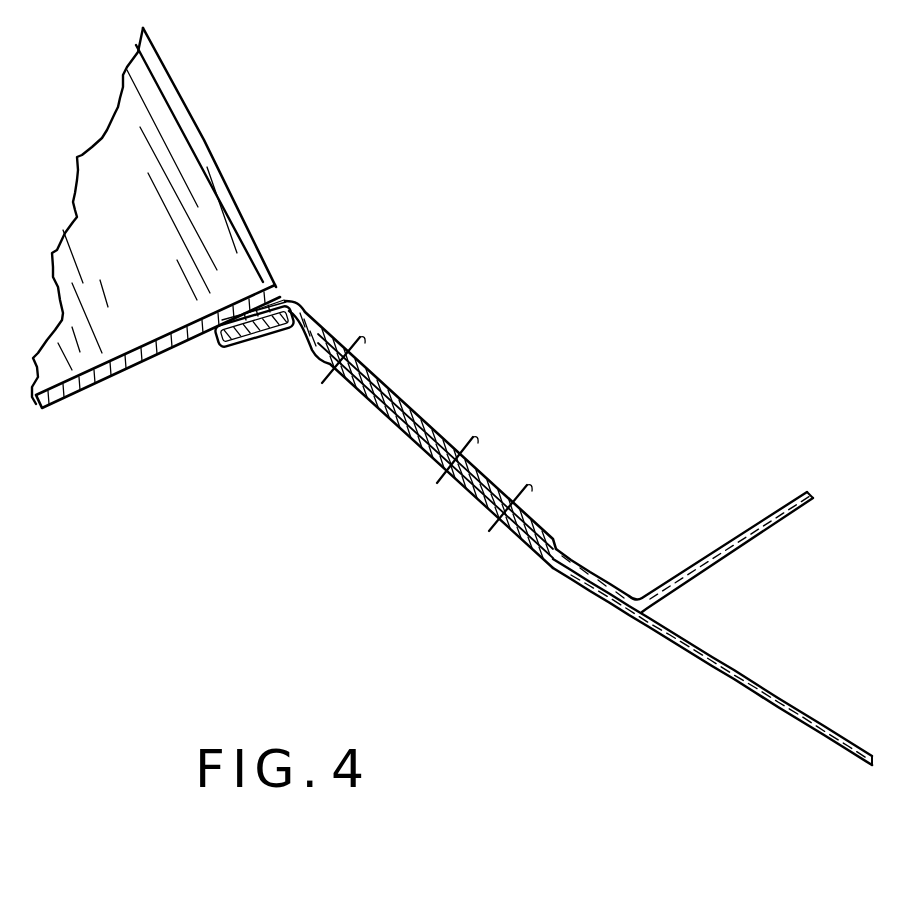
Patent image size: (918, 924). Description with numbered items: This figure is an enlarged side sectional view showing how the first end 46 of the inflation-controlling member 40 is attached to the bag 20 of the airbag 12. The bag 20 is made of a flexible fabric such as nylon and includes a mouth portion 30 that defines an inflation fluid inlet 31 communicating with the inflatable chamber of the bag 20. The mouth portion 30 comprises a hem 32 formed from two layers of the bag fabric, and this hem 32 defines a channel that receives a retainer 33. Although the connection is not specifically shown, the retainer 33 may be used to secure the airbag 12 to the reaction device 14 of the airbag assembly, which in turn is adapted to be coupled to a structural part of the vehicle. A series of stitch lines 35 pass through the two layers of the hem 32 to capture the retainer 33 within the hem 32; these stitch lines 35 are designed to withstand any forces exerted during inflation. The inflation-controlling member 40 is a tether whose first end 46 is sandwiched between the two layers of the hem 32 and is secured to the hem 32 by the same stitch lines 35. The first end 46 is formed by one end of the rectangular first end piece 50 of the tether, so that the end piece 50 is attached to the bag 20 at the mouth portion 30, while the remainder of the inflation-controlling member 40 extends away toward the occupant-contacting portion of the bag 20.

The airbag 12 is at (792, 718).
The reaction device 14 is at (100, 382).
The bag 20 is at (662, 661).
The mouth portion 30 is at (424, 408).
The inflation fluid inlet 31 is at (188, 187).
The hem 32 is at (390, 422).
The retainer 33 is at (244, 357).
The stitch lines 35 is at (365, 343).
The inflation-controlling member 40 is at (769, 510).
The first end 46 is at (573, 553).
The first end piece 50 is at (693, 566).